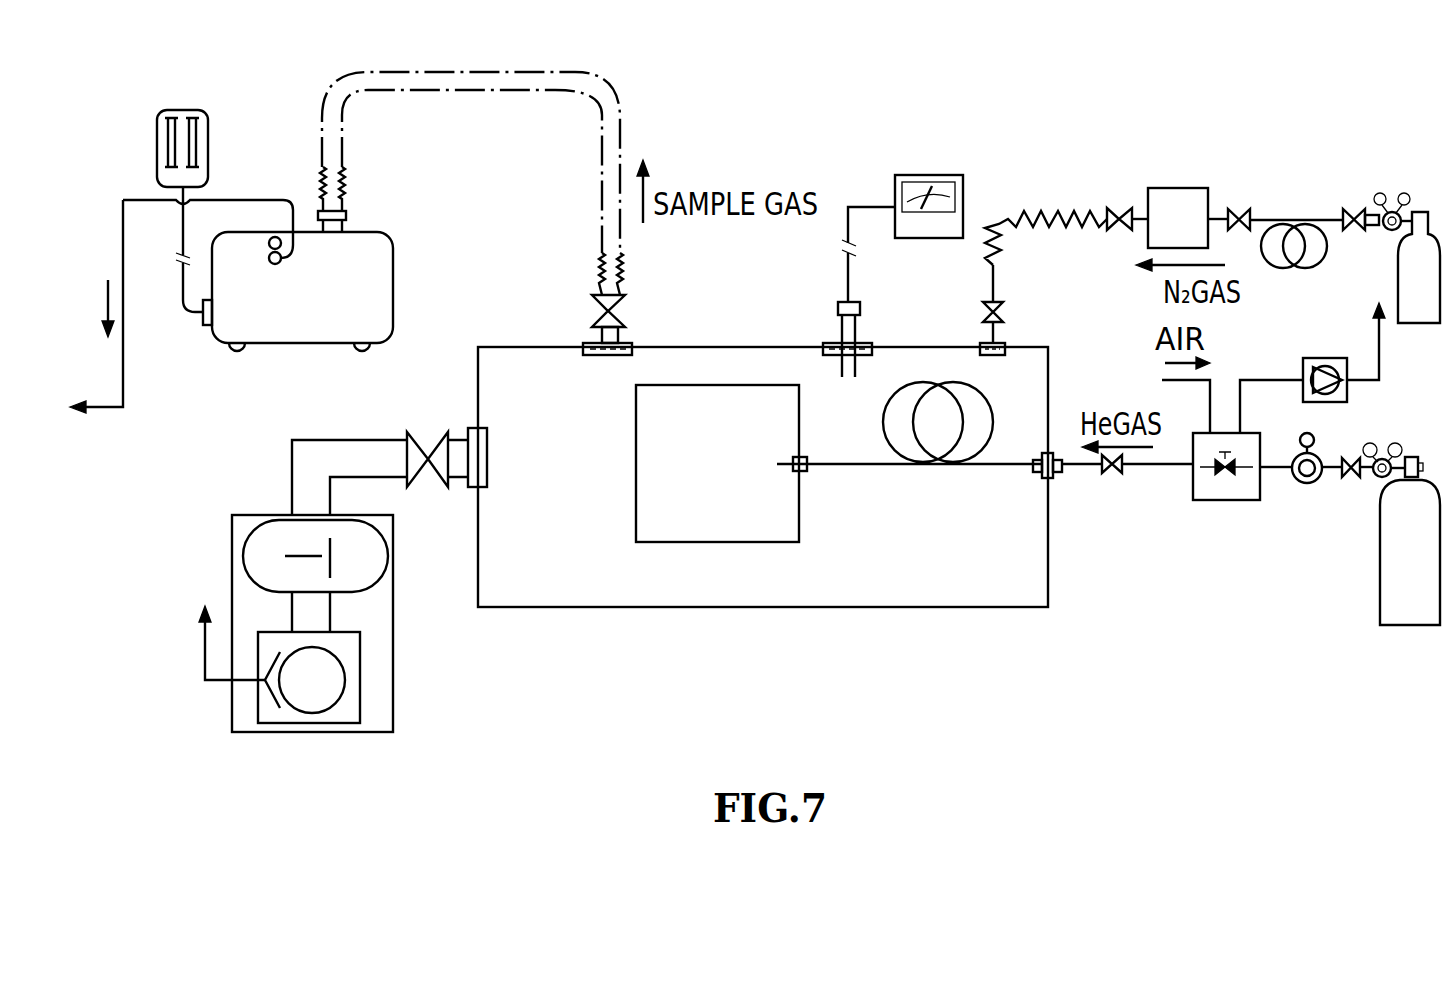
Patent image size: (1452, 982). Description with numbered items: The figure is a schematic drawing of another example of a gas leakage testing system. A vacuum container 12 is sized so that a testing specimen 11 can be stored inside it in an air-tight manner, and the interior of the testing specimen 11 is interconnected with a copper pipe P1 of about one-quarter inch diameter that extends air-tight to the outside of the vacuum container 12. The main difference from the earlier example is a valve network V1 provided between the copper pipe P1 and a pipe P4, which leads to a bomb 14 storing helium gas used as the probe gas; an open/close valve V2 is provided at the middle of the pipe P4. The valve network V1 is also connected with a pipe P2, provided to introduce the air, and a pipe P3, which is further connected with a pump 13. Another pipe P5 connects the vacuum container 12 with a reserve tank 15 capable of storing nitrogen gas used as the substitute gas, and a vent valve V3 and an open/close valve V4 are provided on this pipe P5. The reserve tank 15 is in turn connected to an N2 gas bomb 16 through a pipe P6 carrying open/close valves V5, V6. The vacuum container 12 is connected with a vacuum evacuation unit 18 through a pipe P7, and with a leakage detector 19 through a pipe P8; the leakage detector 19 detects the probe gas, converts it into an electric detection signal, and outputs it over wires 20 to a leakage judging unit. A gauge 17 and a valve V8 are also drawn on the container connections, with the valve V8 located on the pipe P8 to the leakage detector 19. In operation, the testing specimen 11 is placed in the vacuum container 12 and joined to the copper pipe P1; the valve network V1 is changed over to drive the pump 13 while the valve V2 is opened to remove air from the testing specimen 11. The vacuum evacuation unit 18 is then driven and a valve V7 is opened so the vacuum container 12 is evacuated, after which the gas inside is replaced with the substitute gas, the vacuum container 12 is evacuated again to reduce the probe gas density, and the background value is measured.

The testing specimen 11 is at (722, 542).
The vacuum container 12 is at (855, 607).
The pump 13 is at (1318, 363).
The bomb 14 is at (1385, 578).
The reserve tank 15 is at (1184, 196).
The N2 gas bomb 16 is at (1398, 295).
The pressure gauge 17 is at (928, 178).
The vacuum evacuation unit 18 is at (393, 668).
The leakage detector 19 is at (375, 265).
The wires 20 is at (123, 385).
The copper pipe P1 is at (998, 468).
The pipe P2 is at (1210, 405).
The pipe P3 is at (1242, 407).
The pipe P4 is at (1336, 475).
The pipe P5 is at (1018, 212).
The pipe P6 is at (1294, 226).
The pipe P7 is at (365, 455).
The pipe P8 is at (466, 92).
The valve network V1 is at (1237, 500).
The open/close valve V2 is at (1114, 476).
The vent valve V3 is at (1003, 312).
The open/close valve V4 is at (1120, 204).
The open/close valve V5 is at (1240, 208).
The open/close valve V6 is at (1350, 208).
The valve V7 is at (425, 470).
The valve V8 is at (625, 311).